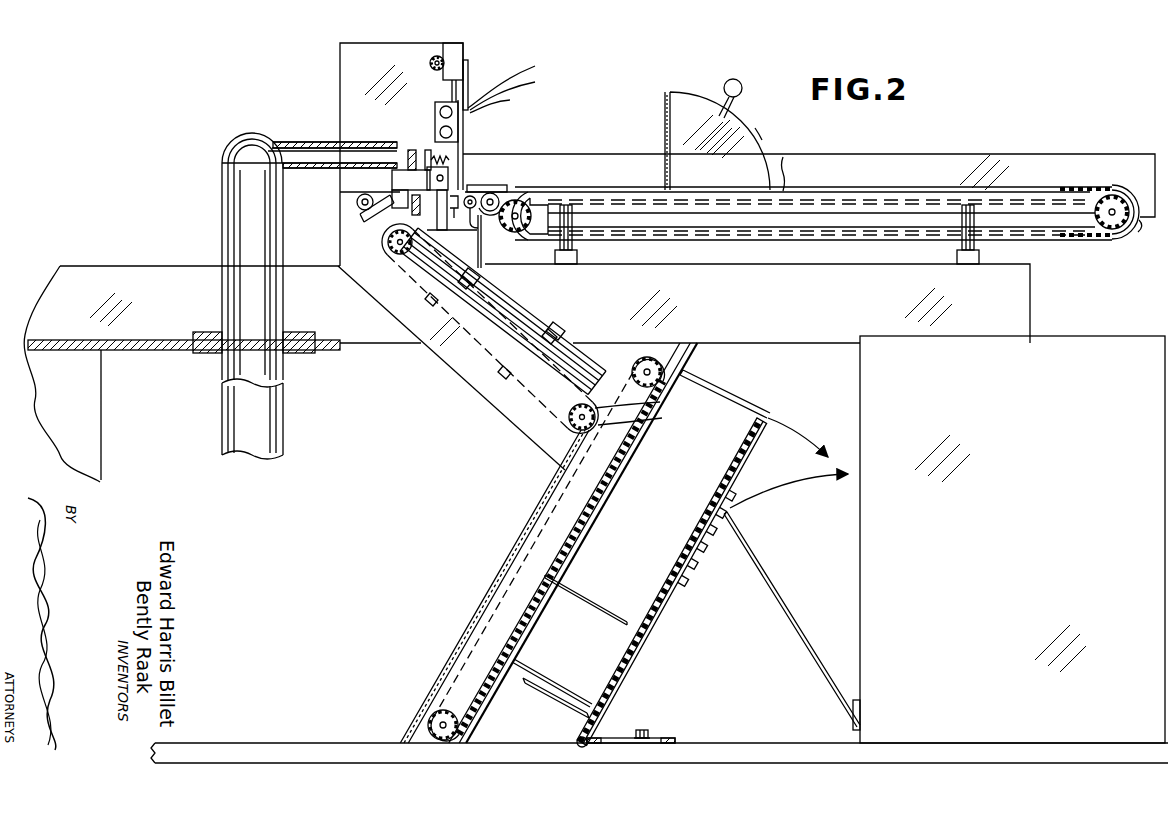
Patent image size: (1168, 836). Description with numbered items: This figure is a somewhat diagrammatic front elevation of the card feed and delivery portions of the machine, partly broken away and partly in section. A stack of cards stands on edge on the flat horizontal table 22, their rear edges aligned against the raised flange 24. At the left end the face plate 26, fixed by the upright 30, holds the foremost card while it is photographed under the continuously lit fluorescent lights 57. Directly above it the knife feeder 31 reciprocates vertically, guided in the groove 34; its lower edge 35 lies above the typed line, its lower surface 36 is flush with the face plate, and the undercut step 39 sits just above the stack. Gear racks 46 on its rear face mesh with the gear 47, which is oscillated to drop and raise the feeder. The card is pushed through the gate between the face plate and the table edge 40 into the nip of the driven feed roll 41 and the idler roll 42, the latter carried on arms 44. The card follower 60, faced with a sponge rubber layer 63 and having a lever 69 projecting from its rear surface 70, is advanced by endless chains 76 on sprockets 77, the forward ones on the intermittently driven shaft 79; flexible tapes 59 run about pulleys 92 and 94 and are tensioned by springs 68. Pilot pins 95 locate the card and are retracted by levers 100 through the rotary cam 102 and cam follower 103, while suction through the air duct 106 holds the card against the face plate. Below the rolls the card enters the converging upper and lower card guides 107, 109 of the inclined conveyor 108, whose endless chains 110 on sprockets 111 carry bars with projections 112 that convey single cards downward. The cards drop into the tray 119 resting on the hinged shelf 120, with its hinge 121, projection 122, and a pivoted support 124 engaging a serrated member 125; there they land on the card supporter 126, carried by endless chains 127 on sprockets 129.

The table 22 is at (480, 185).
The raised flange 24 is at (627, 167).
The face plate 26 is at (466, 140).
The upright 30 is at (396, 52).
The knife feeder 31 is at (469, 76).
The vertical groove 34 is at (450, 94).
The lower edge of knife feeder 35 is at (498, 101).
The lower surface of knife feeder 36 is at (511, 90).
The step 39 is at (510, 78).
The table edge 40 is at (471, 195).
The card feed roll 41 is at (478, 224).
The idler feed roll 42 is at (456, 212).
The arms 44 is at (445, 208).
The gear racks 46 is at (464, 53).
The gear 47 is at (438, 56).
The lights 57 is at (453, 115).
The flexible tapes 59 is at (1033, 184).
The card follower 60 is at (698, 90).
The sponge rubber layer 63 is at (663, 110).
The springs 68 is at (784, 170).
The lever 69 is at (748, 100).
The rear surface of card follower housing 70 is at (760, 137).
The endless chains 76 is at (1083, 192).
The sprockets 77 is at (517, 205).
The shaft 79 is at (522, 224).
The pulley 92 is at (491, 192).
The pulley 94 is at (1138, 229).
The pilot pins 95 is at (410, 150).
The levers 100 is at (396, 165).
The rotary cam 102 is at (366, 195).
The cam follower 103 is at (380, 218).
The air duct 106 is at (275, 133).
The upper card guide 107 is at (484, 256).
The conveyor 108 is at (550, 304).
The lower card guide 109 is at (655, 404).
The endless chains 110 is at (533, 388).
The sprockets 111 is at (394, 254).
The projections 112 is at (430, 297).
The card-receiving tray 119 is at (735, 392).
The inclined shelf 120 is at (752, 459).
The hinge 121 is at (598, 738).
The projection 122 is at (537, 692).
The support 124 is at (795, 586).
The serrated member 125 is at (705, 558).
The card supporter 126 is at (597, 600).
The endless chains 127 is at (437, 690).
The sprockets 129 is at (658, 362).